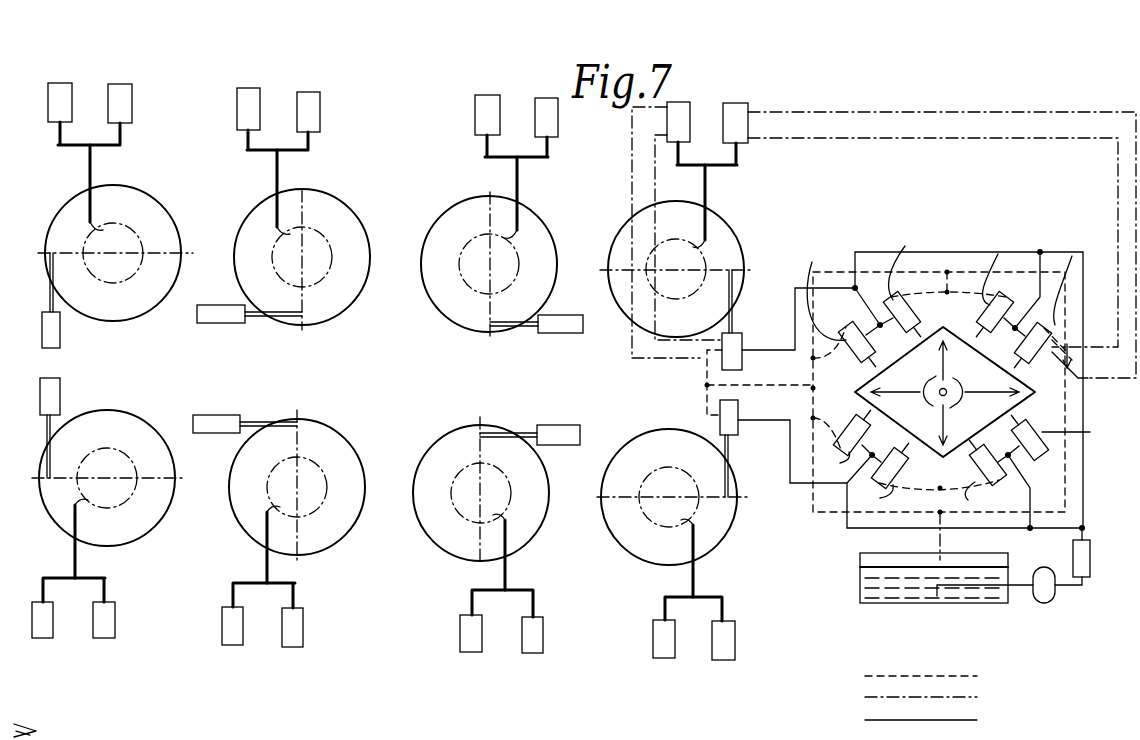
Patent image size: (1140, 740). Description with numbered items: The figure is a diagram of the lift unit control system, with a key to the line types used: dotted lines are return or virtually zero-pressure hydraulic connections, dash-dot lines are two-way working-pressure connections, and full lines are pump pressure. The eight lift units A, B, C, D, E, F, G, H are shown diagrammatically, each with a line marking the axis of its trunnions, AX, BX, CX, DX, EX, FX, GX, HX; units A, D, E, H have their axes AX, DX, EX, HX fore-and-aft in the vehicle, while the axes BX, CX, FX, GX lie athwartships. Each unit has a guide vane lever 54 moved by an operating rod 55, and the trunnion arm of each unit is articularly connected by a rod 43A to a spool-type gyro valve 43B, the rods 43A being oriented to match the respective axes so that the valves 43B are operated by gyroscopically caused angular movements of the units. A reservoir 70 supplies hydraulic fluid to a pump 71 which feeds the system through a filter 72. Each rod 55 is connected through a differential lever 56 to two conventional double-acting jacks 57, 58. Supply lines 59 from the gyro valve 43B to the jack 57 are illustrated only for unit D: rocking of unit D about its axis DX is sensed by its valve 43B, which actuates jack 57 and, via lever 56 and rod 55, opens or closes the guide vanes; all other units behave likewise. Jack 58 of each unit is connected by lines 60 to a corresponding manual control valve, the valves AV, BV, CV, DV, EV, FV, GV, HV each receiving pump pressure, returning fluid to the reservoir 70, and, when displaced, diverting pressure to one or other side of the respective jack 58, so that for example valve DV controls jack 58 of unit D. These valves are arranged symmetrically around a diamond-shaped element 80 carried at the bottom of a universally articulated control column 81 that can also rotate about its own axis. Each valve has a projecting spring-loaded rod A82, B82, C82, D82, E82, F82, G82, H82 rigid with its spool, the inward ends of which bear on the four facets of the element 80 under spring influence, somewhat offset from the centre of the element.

The rod 43A is at (52, 318).
The gyro valve 43B is at (60, 390).
The guide vane lever 54 is at (97, 228).
The operating rod 55 is at (515, 177).
The differential lever 56 is at (118, 147).
The hydraulic jack 57 is at (62, 90).
The hydraulic jack 58 is at (120, 92).
The supply lines 59 is at (665, 358).
The lines 60 is at (933, 120).
The reservoir 70 is at (878, 604).
The pump 71 is at (1044, 604).
The filter 72 is at (1090, 565).
The diamond-shaped element 80 is at (964, 430).
The control column 81 is at (945, 388).
The lift unit A is at (168, 197).
The lift unit B is at (355, 202).
The lift unit C is at (553, 199).
The lift unit D is at (753, 265).
The lift unit E is at (133, 412).
The lift unit F is at (362, 452).
The lift unit G is at (548, 491).
The lift unit H is at (745, 491).
The trunnion axis AX is at (170, 255).
The trunnion axis BX is at (305, 318).
The trunnion axis CX is at (486, 320).
The trunnion axis DX is at (734, 276).
The trunnion axis EX is at (157, 483).
The trunnion axis FX is at (298, 436).
The trunnion axis GX is at (480, 433).
The trunnion axis HX is at (725, 515).
The spring-loaded rod A82 is at (851, 336).
The spring-loaded rod B82 is at (922, 316).
The spring-loaded rod C82 is at (1004, 309).
The spring-loaded rod D82 is at (1080, 395).
The spring-loaded rod E82 is at (848, 422).
The spring-loaded rod F82 is at (911, 463).
The spring-loaded rod G82 is at (991, 458).
The spring-loaded rod H82 is at (1038, 432).
The manual control valve AV is at (824, 289).
The manual control valve BV is at (908, 261).
The manual control valve CV is at (998, 268).
The manual control valve DV is at (1073, 280).
The manual control valve EV is at (834, 463).
The manual control valve FV is at (874, 498).
The manual control valve GV is at (980, 498).
The manual control valve HV is at (1102, 436).